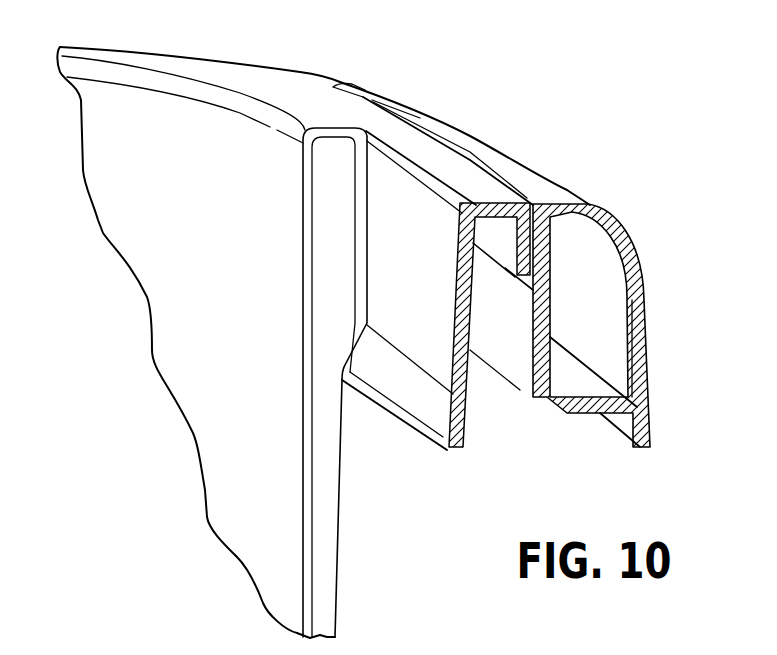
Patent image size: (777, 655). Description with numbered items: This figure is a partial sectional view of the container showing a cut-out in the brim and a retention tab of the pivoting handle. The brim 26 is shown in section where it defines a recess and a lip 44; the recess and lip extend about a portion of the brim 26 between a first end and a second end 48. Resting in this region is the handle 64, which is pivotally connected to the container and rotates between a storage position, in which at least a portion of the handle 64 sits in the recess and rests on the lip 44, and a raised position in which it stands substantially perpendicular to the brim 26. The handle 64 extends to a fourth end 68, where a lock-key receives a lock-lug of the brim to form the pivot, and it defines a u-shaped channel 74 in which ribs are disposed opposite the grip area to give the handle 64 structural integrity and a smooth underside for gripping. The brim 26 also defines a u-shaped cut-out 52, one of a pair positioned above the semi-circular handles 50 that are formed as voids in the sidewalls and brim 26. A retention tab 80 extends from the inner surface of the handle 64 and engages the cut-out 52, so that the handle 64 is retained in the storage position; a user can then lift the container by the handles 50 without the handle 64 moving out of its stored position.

The brim 26 is at (318, 93).
The second end 48 is at (373, 98).
The fourth end 68 is at (417, 120).
The handle 64 is at (525, 178).
The lip 44 is at (650, 407).
The u-shaped channel 74 is at (617, 352).
The cut-out 52 is at (500, 270).
The retention tab 80 is at (517, 278).
The handle 50 is at (393, 413).